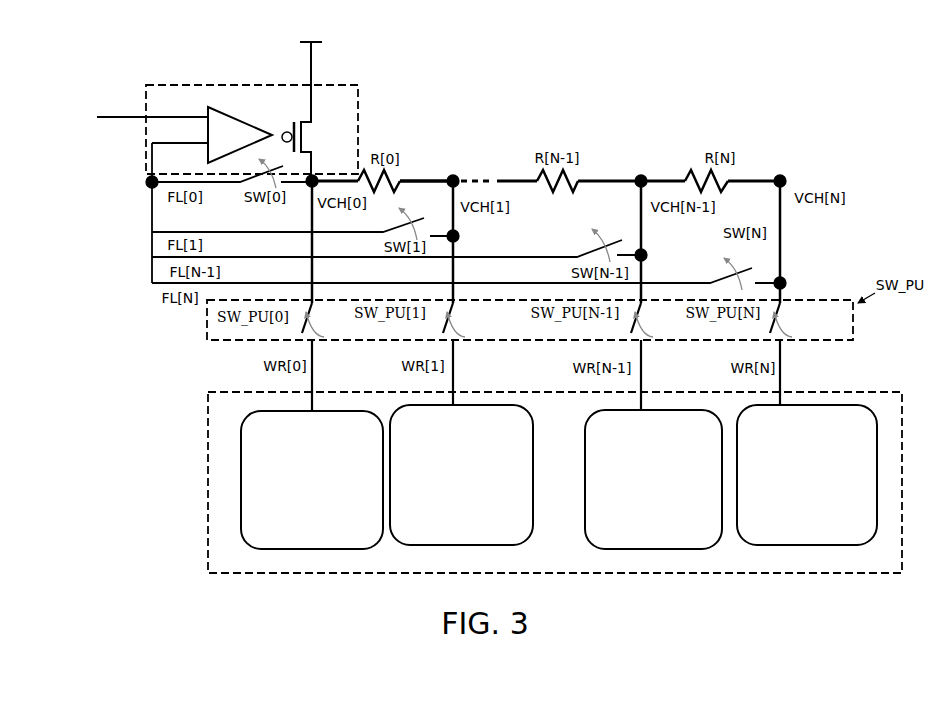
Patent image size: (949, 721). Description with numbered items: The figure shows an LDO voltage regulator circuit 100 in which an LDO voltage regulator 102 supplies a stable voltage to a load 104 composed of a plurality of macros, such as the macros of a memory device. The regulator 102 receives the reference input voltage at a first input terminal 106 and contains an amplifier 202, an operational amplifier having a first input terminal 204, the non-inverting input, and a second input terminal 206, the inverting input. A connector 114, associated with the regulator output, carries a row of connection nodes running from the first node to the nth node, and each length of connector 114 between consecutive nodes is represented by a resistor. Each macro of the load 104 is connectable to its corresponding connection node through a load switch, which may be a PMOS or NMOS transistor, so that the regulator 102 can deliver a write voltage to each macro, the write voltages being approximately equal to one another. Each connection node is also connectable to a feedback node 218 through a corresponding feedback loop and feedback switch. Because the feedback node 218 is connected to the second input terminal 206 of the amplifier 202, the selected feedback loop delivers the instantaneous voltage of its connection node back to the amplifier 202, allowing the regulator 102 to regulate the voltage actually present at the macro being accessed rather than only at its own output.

The LDO voltage regulator circuit 100 is at (765, 86).
The LDO voltage regulator 102 is at (288, 100).
The load 104 is at (905, 406).
The first input terminal 106 is at (91, 105).
The connector 114 is at (422, 179).
The amplifier 202 is at (238, 117).
The first input terminal 204 is at (177, 107).
The second input terminal 206 is at (180, 152).
The feedback node 218 is at (146, 184).